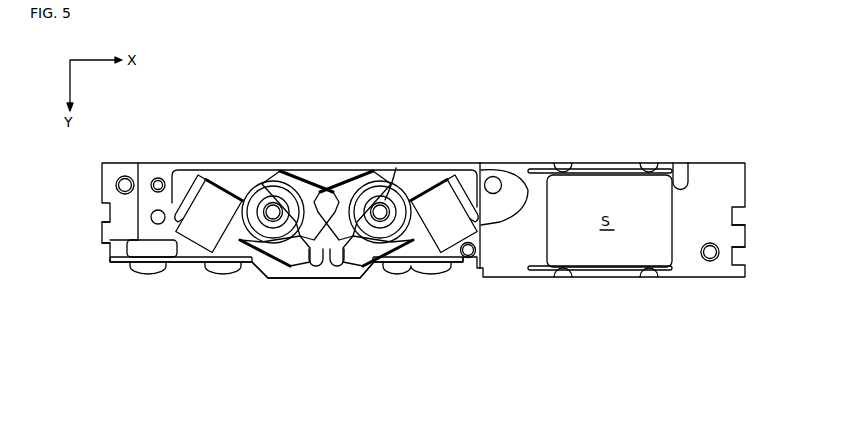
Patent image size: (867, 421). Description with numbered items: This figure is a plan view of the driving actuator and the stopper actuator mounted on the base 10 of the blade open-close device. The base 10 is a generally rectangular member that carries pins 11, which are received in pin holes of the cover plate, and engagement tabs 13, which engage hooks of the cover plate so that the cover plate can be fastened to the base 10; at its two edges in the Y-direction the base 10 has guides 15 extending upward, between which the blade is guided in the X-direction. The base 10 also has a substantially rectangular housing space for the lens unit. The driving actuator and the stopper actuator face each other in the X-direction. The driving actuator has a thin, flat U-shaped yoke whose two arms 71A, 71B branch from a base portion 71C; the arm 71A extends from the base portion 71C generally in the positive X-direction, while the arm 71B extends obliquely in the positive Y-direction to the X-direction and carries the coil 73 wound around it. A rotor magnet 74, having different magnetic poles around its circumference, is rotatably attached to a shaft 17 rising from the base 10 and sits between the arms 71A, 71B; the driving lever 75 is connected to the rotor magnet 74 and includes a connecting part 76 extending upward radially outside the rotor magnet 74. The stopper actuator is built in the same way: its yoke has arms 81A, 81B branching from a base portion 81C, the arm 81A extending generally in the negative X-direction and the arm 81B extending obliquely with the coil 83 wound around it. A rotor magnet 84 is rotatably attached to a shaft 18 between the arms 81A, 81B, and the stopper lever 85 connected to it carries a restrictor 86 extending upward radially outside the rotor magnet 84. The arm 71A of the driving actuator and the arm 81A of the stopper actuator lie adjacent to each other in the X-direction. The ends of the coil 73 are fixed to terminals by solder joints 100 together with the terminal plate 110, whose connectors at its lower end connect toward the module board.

The base 10 is at (712, 170).
The pins 11 is at (122, 177).
The engagement tabs 13 is at (102, 229).
The guides 15 is at (610, 170).
The shaft 17 is at (291, 170).
The shaft 18 is at (399, 168).
The arm 71A is at (325, 180).
The arm 71B is at (281, 260).
The base portion 71C is at (172, 176).
The coil 73 is at (224, 190).
The rotor magnet 74 is at (273, 205).
The driving lever 75 is at (304, 282).
The connecting part 76 is at (315, 268).
The arm 81A is at (348, 172).
The arm 81B is at (400, 272).
The base portion 81C is at (478, 175).
The coil 83 is at (436, 190).
The rotor magnet 84 is at (380, 205).
The stopper lever 85 is at (372, 284).
The restrictor 86 is at (343, 268).
The solder joints 100 is at (148, 275).
The terminal plate 110 is at (188, 262).